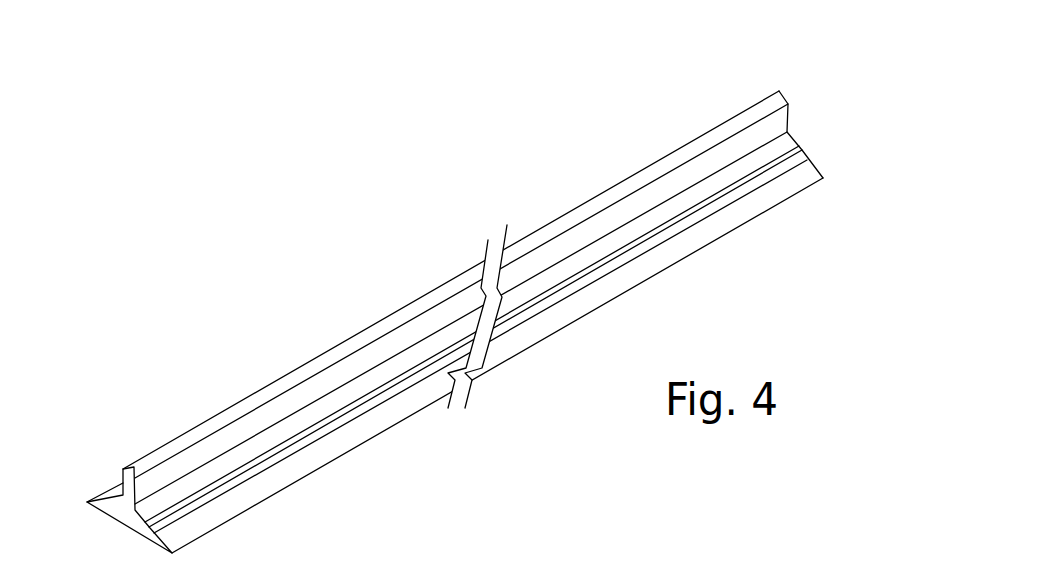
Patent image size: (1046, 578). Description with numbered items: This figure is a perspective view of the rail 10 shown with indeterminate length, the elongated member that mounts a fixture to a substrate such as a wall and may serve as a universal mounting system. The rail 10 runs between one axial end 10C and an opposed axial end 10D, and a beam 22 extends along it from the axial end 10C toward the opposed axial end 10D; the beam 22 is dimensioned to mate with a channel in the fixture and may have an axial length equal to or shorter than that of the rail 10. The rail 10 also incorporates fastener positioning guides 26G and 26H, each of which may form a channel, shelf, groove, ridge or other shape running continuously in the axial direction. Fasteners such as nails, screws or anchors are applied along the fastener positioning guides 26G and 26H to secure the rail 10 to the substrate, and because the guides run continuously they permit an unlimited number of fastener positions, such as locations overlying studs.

The rail 10 is at (426, 286).
The axial end of rail 10C is at (101, 481).
The opposed axial end of rail 10D is at (810, 105).
The beam 22 is at (435, 322).
The fastener positioning guide 26G is at (104, 494).
The fastener positioning guide 26H is at (303, 448).